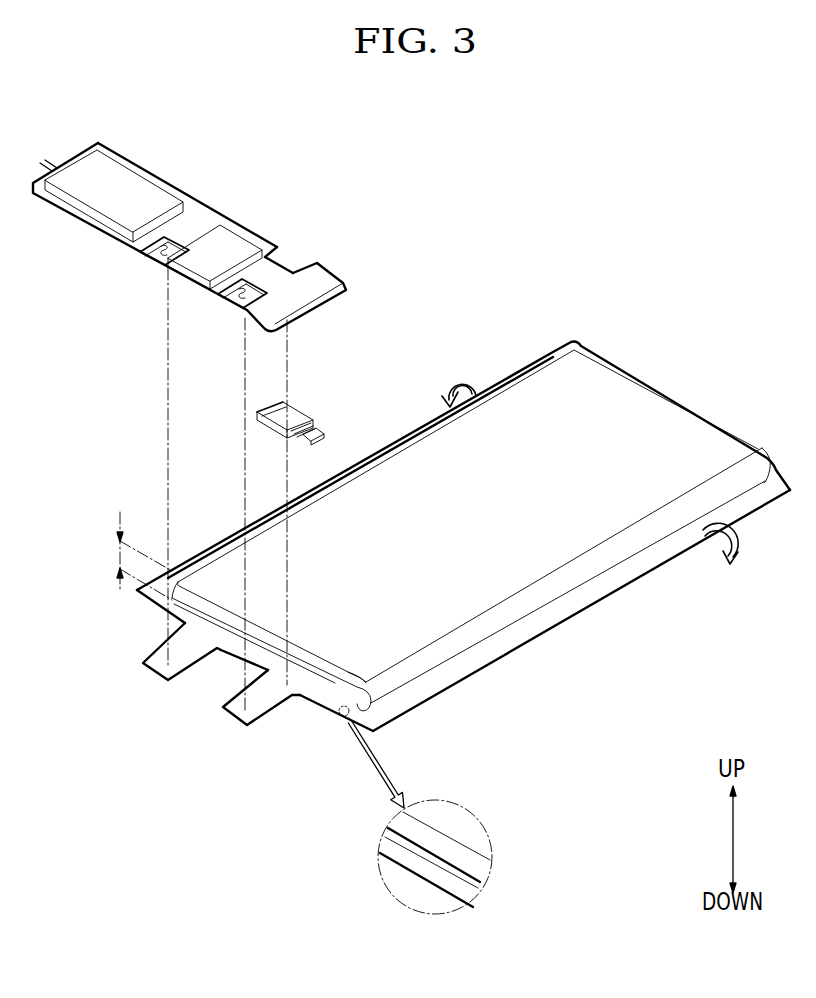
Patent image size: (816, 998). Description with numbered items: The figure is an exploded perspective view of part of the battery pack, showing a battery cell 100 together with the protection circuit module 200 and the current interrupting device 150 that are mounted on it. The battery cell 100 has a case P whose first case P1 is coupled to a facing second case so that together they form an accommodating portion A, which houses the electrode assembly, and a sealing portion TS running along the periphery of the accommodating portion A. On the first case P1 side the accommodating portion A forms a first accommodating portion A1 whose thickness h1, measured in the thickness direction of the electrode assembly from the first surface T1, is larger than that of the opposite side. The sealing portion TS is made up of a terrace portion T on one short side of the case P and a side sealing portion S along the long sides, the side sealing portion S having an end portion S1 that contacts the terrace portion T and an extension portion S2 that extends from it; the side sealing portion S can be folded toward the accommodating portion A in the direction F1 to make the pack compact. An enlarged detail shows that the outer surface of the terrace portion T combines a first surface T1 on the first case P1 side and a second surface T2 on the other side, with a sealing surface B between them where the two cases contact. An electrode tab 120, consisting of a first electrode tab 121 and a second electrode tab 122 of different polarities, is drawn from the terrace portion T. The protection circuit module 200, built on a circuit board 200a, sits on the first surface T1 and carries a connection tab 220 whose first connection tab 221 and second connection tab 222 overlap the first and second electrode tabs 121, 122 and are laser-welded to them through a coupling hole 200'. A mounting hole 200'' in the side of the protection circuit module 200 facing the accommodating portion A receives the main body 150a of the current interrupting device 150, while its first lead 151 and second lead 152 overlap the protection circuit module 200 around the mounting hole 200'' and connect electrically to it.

The battery cell 100 is at (440, 597).
The electrode tab 120 is at (201, 704).
The first electrode tab 121 is at (240, 722).
The second electrode tab 122 is at (160, 670).
The current interrupting device 150 is at (290, 417).
The main body 150a is at (295, 412).
The first lead 151 is at (317, 430).
The second lead 152 is at (270, 405).
The protection circuit module 200 is at (244, 257).
The coupling hole 200' is at (155, 257).
The mounting hole 200'' is at (306, 231).
The circuit board 200a is at (327, 277).
The connection tab 220 is at (182, 304).
The first connection tab 221 is at (220, 318).
The second connection tab 222 is at (153, 258).
The accommodating portion A is at (471, 516).
The first accommodating portion A1 is at (602, 437).
The case P is at (463, 545).
The first case P1 is at (463, 545).
The side sealing portion S is at (463, 545).
The end portion S1 is at (411, 718).
The extension portion S2 is at (568, 607).
The terrace portion T is at (414, 777).
The first surface T1 is at (443, 832).
The second surface T2 is at (438, 893).
The sealing portion TS is at (414, 757).
The sealing surface B is at (453, 868).
The folding direction of the side sealing portion F1 is at (590, 470).
The thickness of the first accommodating portion h1 is at (131, 556).